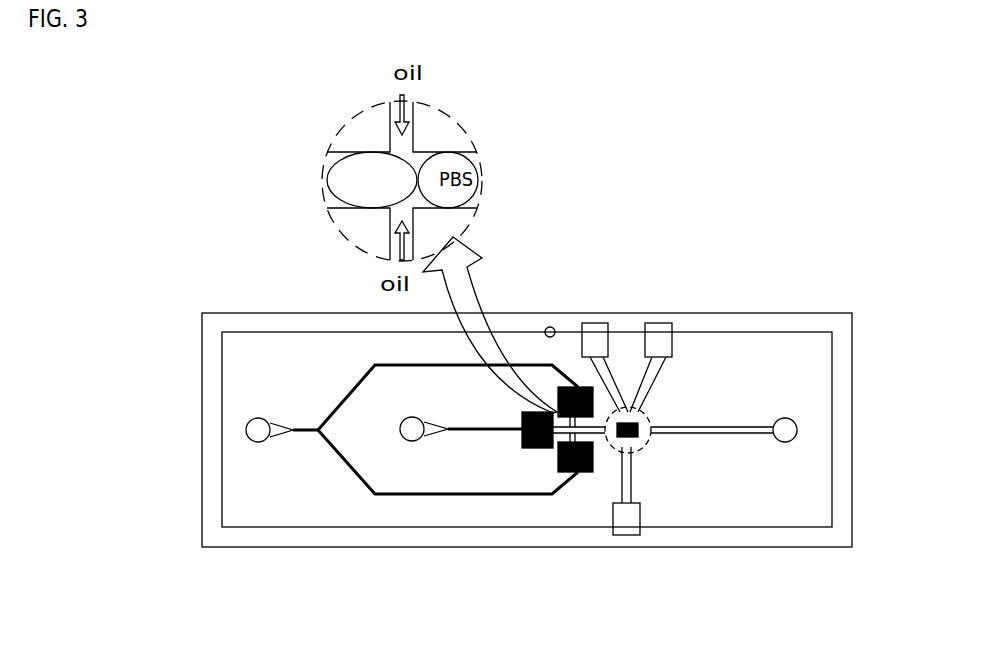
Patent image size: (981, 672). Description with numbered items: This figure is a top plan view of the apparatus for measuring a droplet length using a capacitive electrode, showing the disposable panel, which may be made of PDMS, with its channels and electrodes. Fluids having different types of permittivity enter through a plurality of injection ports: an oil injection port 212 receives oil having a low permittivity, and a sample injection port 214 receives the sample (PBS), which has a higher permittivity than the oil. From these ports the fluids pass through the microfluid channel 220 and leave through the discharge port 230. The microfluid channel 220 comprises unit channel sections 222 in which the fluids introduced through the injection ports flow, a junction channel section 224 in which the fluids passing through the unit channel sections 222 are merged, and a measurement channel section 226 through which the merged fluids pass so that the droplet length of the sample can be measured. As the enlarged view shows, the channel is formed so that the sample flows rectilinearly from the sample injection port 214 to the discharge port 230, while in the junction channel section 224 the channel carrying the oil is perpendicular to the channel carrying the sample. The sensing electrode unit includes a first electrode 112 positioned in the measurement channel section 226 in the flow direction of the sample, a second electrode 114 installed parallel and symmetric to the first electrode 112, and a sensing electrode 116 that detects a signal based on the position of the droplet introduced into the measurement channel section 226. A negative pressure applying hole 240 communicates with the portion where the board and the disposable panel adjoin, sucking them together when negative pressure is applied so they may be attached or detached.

The first electrode 112 is at (595, 323).
The second electrode 114 is at (657, 323).
The sensing electrode 116 is at (630, 535).
The oil injection port 212 is at (246, 429).
The sample injection port 214 is at (398, 438).
The microfluid channel 220 is at (592, 600).
The unit channel section 222 is at (497, 430).
The junction channel section 224 is at (577, 472).
The measurement channel section 226 is at (618, 445).
The discharge port 230 is at (790, 430).
The negative pressure applying hole 240 is at (550, 327).